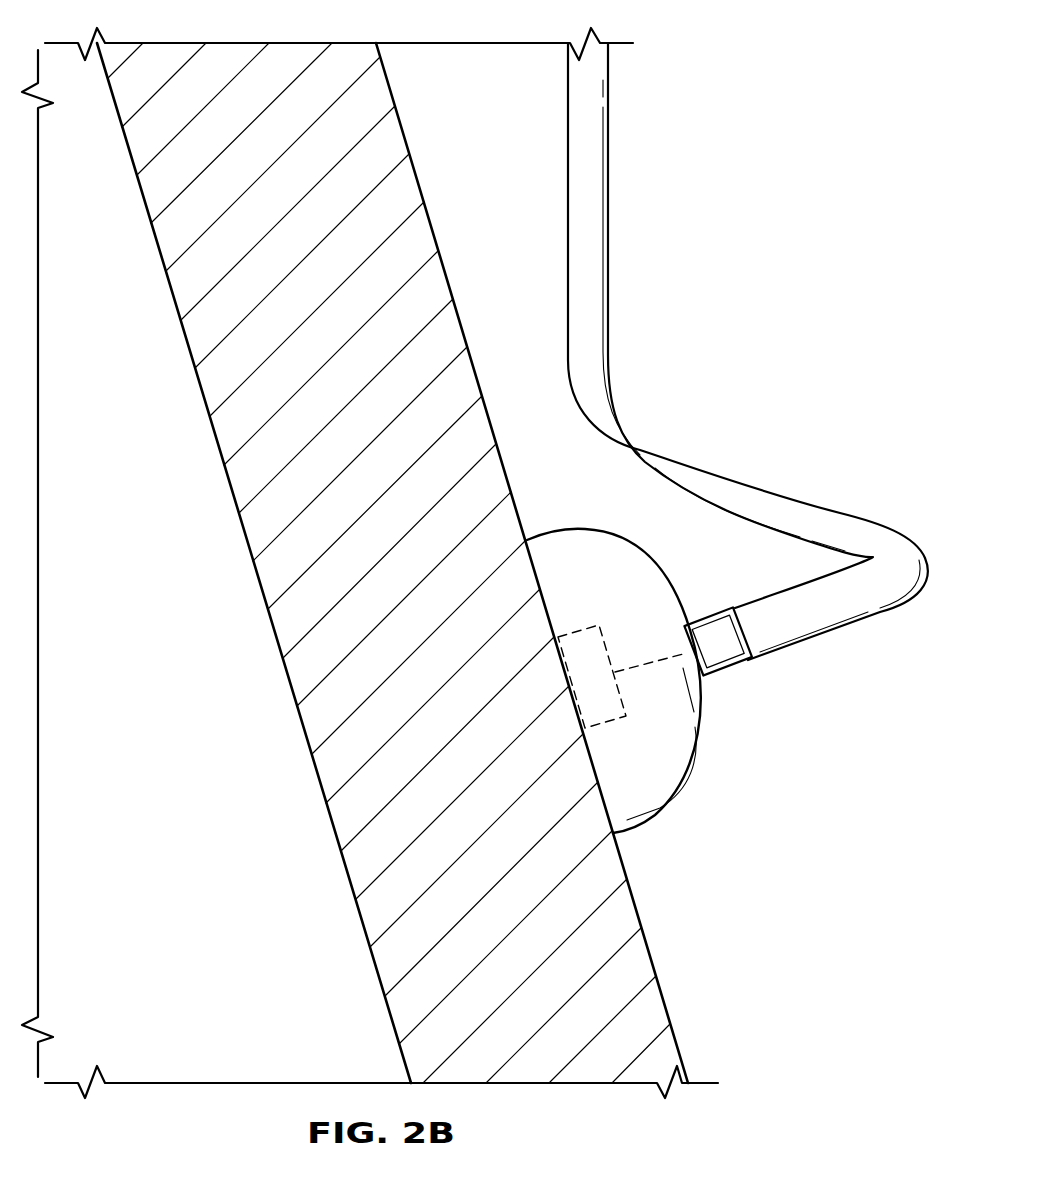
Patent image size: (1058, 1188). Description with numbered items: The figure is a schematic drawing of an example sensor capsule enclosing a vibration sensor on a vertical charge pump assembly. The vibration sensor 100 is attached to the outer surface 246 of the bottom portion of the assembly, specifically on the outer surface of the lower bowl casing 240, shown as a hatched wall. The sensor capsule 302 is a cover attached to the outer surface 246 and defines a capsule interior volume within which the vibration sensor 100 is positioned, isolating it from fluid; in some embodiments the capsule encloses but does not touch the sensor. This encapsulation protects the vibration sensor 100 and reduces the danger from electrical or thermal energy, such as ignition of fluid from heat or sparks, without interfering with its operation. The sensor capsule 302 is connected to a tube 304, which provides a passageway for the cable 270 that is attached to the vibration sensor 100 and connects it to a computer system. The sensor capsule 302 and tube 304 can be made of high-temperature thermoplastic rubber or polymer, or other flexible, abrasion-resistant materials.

The vibration sensor 100 is at (583, 627).
The lower bowl casing 240 is at (287, 628).
The outer surface 246 is at (650, 952).
The cable 270 is at (722, 672).
The sensor capsule 302 is at (653, 820).
The tube 304 is at (610, 197).